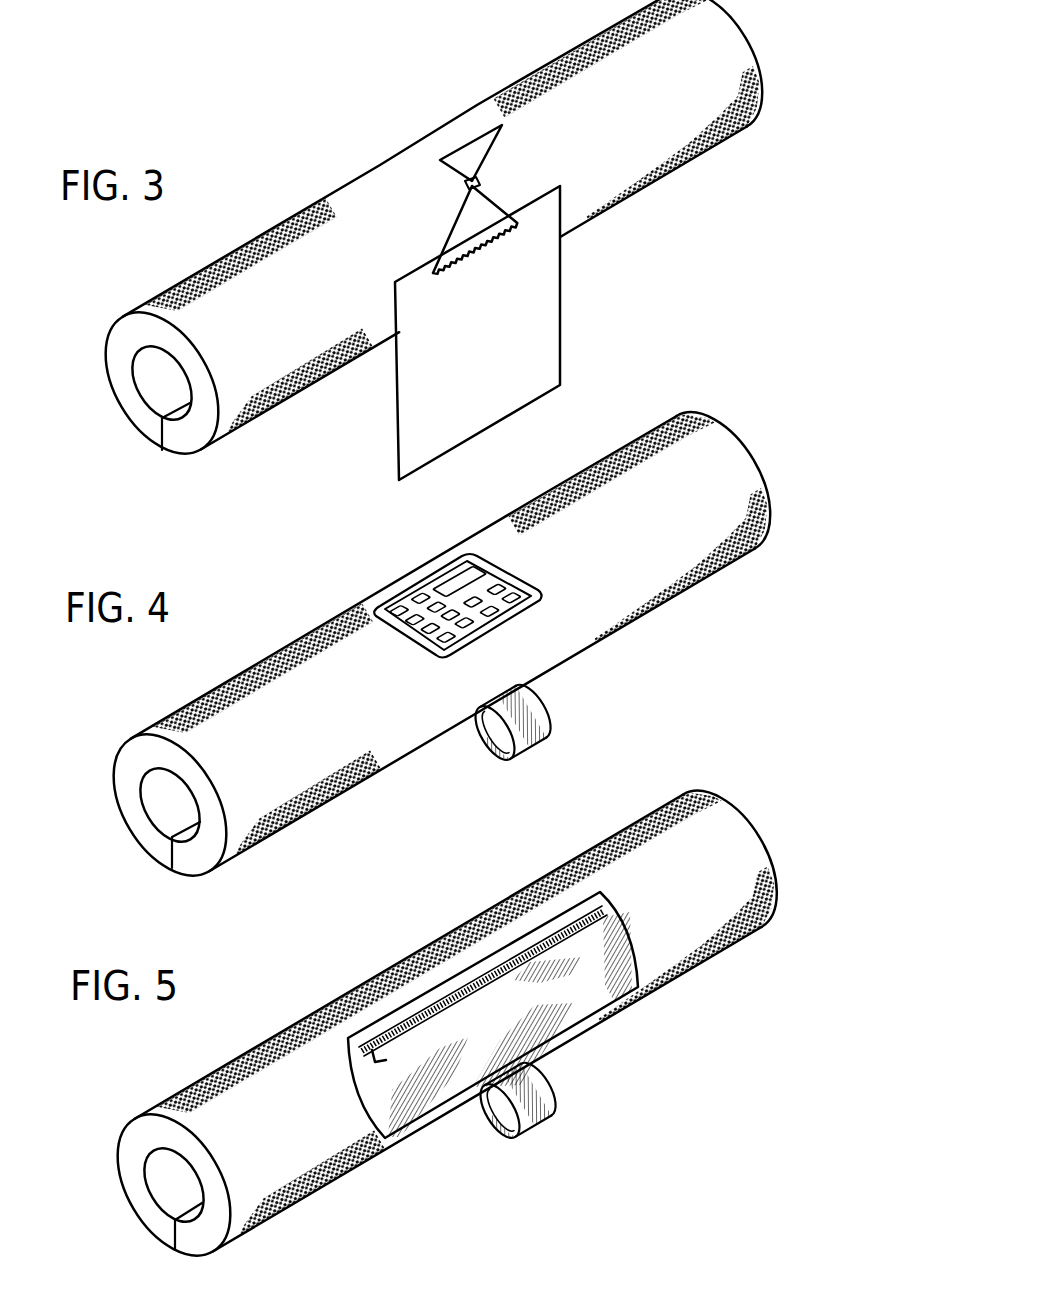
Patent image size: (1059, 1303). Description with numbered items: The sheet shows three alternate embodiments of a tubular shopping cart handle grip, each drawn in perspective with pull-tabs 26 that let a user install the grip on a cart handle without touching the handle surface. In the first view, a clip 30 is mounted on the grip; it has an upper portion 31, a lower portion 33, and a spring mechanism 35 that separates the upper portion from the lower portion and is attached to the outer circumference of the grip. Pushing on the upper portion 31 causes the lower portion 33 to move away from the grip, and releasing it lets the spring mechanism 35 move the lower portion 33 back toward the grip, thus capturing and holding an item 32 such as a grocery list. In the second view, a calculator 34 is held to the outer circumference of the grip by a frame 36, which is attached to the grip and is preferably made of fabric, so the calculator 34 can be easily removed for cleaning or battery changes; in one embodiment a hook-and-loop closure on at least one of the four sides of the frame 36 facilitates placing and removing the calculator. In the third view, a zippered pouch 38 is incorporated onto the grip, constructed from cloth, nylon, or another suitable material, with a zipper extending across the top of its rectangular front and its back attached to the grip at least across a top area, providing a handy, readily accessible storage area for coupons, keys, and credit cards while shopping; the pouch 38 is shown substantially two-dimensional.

In FIG. 4, the pull-tabs 26 is at (543, 707).
In FIG. 5, the pull-tabs 26 is at (550, 1090).
In FIG. 3, the clip 30 is at (483, 142).
In FIG. 3, the upper portion 31 is at (448, 165).
In FIG. 3, the item 32 is at (512, 304).
In FIG. 3, the lower portion 33 is at (470, 228).
In FIG. 4, the calculator 34 is at (430, 587).
In FIG. 3, the spring mechanism 35 is at (478, 182).
In FIG. 4, the frame 36 is at (375, 605).
In FIG. 5, the zippered pouch 38 is at (574, 992).